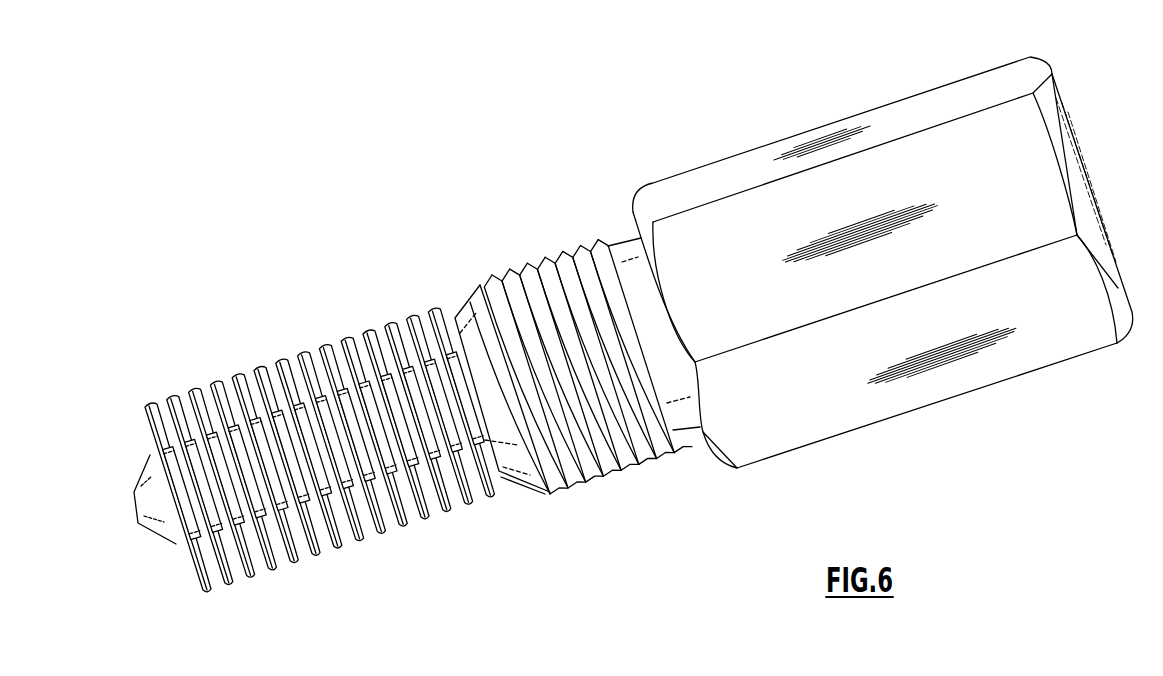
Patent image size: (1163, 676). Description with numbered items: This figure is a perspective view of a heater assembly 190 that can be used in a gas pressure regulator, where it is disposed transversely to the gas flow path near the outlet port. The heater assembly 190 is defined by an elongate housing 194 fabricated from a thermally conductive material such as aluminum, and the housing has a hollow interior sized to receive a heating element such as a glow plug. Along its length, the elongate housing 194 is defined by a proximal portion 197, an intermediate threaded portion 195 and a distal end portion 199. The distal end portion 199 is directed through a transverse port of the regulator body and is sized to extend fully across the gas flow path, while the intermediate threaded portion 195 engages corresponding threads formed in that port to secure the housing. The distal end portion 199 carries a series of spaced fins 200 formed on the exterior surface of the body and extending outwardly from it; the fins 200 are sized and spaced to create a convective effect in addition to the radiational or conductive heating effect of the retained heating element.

The heater assembly 190 is at (302, 110).
The elongate housing 194 is at (712, 178).
The intermediate threaded portion 195 is at (525, 267).
The proximal portion 197 is at (808, 437).
The distal end portion 199 is at (493, 457).
The spaced fins 200 is at (231, 377).